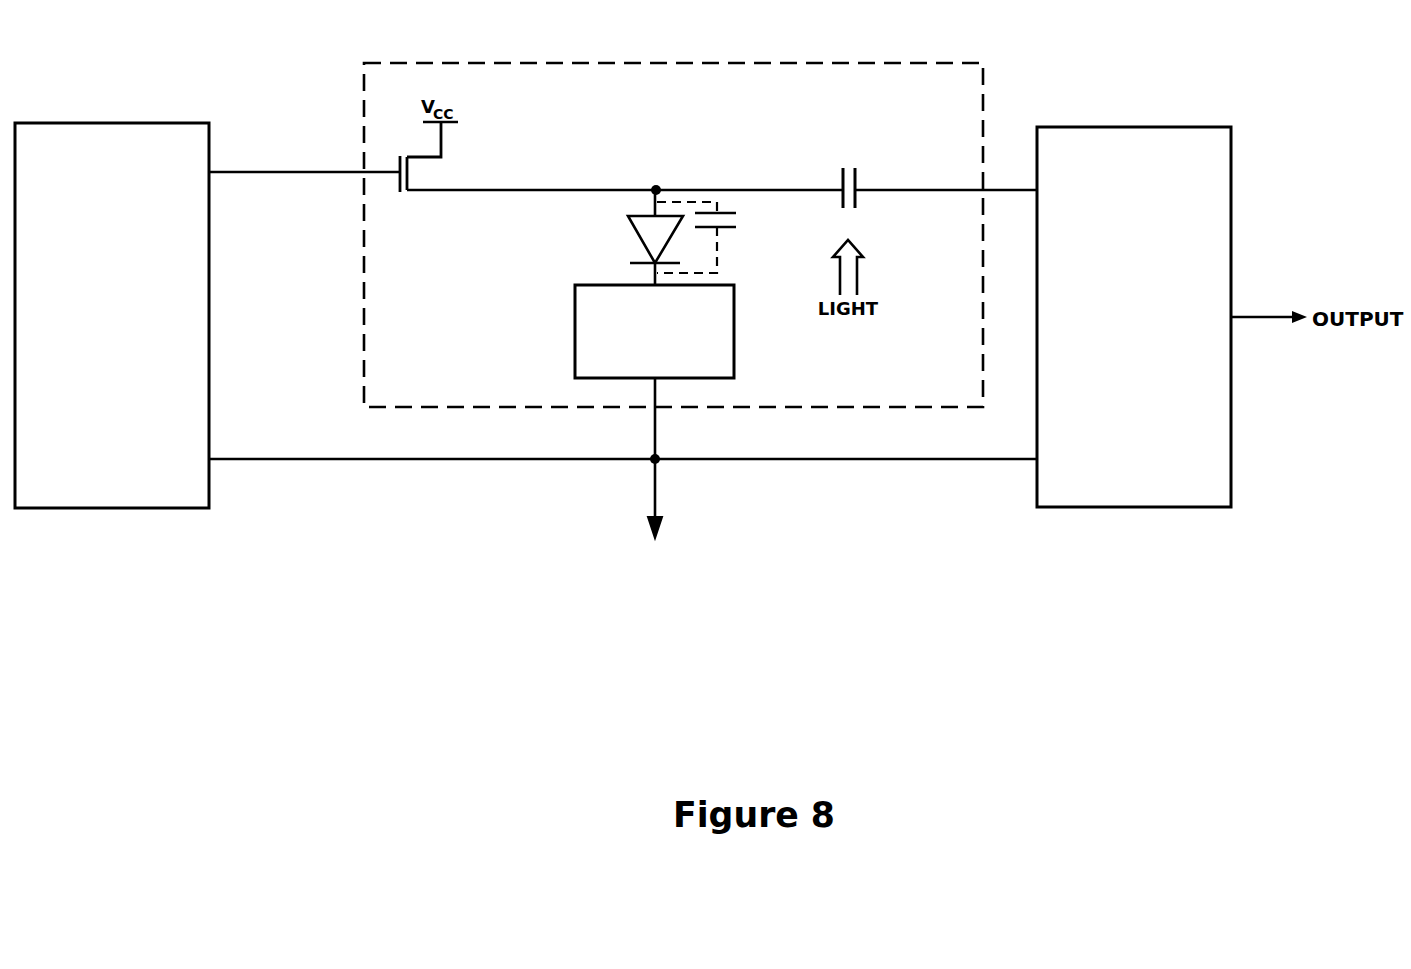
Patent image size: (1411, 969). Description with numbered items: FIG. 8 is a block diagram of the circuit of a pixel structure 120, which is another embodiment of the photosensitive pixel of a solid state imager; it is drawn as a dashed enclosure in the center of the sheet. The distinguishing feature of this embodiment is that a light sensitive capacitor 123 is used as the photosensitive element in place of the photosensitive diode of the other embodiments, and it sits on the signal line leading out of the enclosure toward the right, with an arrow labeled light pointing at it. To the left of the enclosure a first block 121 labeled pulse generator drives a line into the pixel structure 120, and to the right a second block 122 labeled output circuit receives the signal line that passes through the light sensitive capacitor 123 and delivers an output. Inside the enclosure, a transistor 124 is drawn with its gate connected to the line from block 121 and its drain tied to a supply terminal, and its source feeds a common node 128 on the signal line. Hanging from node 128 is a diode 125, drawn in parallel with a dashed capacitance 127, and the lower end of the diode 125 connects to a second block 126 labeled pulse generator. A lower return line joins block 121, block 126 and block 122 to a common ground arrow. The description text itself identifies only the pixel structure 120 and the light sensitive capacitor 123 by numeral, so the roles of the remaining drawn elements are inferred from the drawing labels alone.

The pixel structure 120 is at (827, 60).
The pulse generator 121 is at (177, 121).
The output circuit 122 is at (1199, 124).
The light sensitive capacitor 123 is at (861, 180).
The transistor 124 is at (402, 196).
The photodiode 125 is at (628, 233).
The pulse generator 126 is at (570, 294).
The capacitance (photodiode capacitance) 127 is at (743, 224).
The node 128 is at (650, 185).